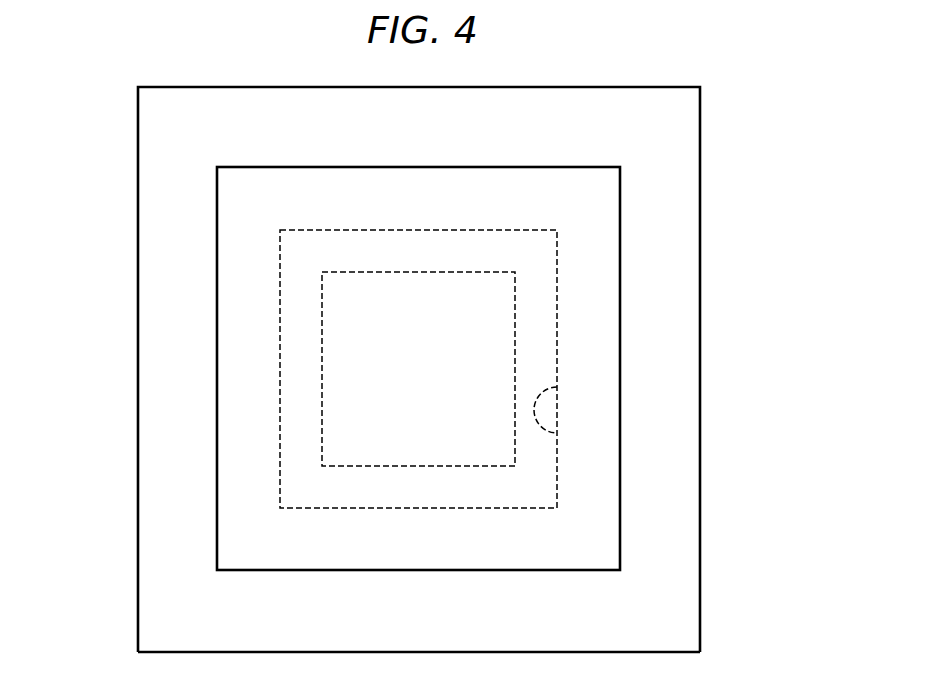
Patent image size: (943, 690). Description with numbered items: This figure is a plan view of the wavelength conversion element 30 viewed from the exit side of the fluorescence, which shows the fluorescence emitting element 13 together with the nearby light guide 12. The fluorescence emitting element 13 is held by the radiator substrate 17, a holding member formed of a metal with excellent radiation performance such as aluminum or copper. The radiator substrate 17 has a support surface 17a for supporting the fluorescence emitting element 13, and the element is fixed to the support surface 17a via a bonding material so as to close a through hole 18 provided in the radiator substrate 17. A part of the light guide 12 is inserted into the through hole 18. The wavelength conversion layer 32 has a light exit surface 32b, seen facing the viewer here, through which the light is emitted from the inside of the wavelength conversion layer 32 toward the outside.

The fluorescence emitting element 13 is at (128, 220).
The wavelength conversion element 30 is at (203, 317).
The radiator substrate 17 is at (700, 134).
The support surface 17a is at (188, 623).
The wavelength conversion layer 32 is at (526, 361).
The light exit surface 32b is at (562, 186).
The light guide 12 is at (515, 322).
The through hole 18 is at (557, 433).